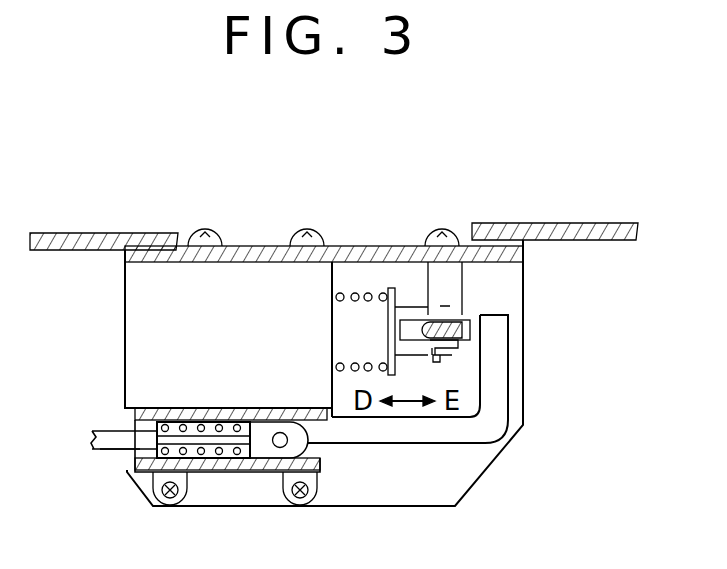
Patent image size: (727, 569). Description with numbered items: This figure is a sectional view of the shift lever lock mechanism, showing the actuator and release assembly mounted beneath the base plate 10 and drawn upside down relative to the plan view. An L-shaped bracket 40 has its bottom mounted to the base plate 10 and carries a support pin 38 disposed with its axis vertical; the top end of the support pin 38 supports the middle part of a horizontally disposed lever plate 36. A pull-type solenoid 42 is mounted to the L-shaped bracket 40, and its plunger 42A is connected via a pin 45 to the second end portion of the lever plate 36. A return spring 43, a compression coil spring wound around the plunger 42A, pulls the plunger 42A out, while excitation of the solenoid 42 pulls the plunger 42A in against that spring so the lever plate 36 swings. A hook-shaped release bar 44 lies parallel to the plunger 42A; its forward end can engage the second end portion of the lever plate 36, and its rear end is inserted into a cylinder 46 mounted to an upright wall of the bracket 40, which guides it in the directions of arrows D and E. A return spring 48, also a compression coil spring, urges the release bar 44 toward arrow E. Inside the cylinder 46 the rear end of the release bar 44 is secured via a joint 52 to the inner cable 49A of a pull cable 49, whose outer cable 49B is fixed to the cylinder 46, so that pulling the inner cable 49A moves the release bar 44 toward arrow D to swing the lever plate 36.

The base plate 10 is at (559, 222).
The lever plate 36 is at (470, 330).
The support pin 38 is at (465, 290).
The L-shaped bracket 40 is at (258, 250).
The solenoid 42 is at (125, 332).
The plunger 42A is at (347, 328).
The return spring 43 is at (368, 292).
The release bar 44 is at (412, 447).
The pin 45 is at (440, 362).
The cylinder 46 is at (236, 466).
The return spring 48 is at (207, 472).
The pull cable 49 is at (104, 408).
The inner cable 49A is at (193, 440).
The outer cable 49B is at (112, 449).
The joint 52 is at (263, 458).